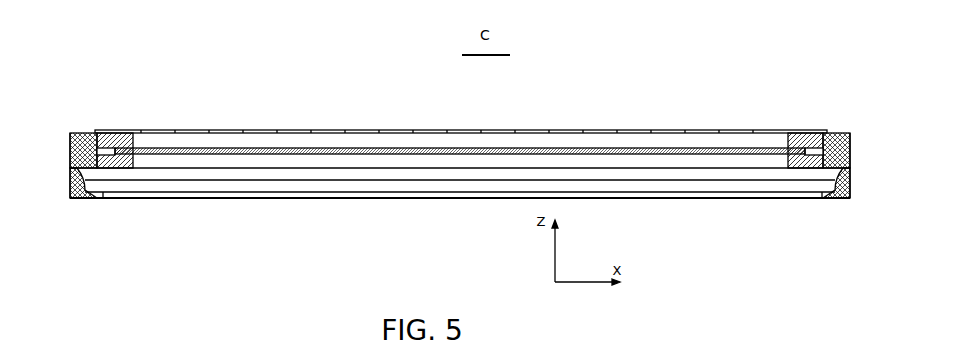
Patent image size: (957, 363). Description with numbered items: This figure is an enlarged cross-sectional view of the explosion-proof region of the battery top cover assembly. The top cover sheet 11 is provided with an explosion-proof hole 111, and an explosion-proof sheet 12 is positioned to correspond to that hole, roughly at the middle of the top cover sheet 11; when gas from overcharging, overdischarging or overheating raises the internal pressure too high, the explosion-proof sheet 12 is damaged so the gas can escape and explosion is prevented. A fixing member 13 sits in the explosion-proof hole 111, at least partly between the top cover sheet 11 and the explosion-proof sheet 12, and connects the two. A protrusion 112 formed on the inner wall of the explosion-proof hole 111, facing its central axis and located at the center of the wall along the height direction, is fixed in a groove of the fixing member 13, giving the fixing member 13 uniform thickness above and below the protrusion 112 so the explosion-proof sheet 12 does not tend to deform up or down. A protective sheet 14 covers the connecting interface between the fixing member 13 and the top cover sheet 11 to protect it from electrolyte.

The top cover sheet 11 is at (78, 135).
The explosion-proof hole 111 is at (98, 165).
The protrusion 112 is at (125, 162).
The explosion-proof sheet 12 is at (738, 150).
The fixing member 13 is at (116, 133).
The protective sheet 14 is at (617, 130).